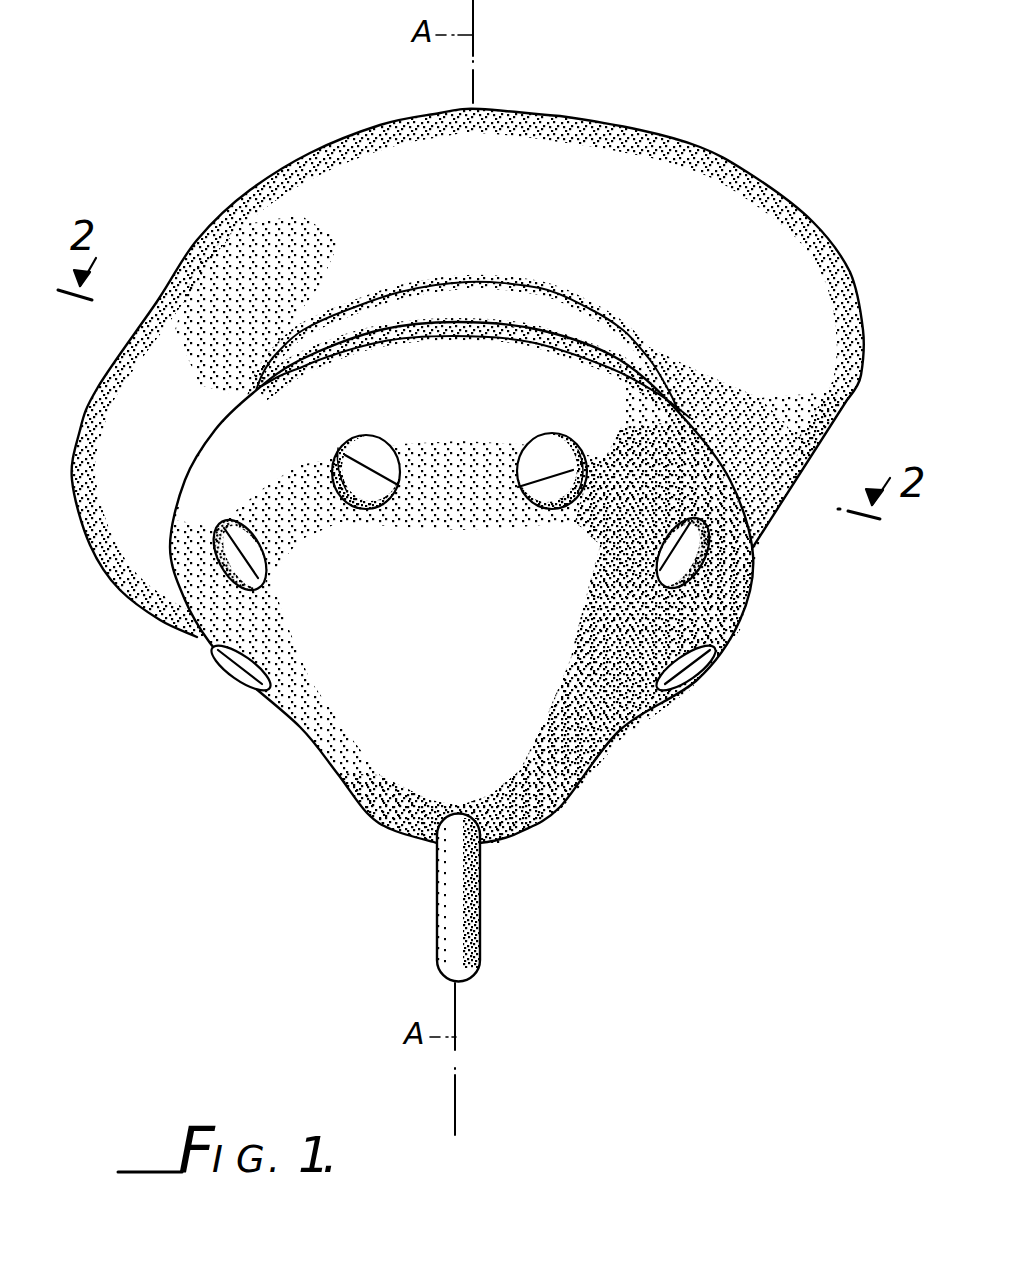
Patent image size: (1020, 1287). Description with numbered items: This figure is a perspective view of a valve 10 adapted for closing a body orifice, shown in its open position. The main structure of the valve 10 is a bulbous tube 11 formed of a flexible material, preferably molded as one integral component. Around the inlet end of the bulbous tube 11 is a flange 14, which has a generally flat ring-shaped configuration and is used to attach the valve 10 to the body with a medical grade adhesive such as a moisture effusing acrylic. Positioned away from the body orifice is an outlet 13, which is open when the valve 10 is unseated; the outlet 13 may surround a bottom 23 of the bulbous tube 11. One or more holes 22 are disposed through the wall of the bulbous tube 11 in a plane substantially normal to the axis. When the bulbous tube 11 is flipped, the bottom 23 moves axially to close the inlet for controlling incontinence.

The valve 10 is at (248, 762).
The bulbous tube 11 is at (598, 760).
The outlet 13 is at (697, 679).
The flange 14 is at (833, 253).
The holes 22 is at (535, 450).
The bottom 23 is at (532, 826).